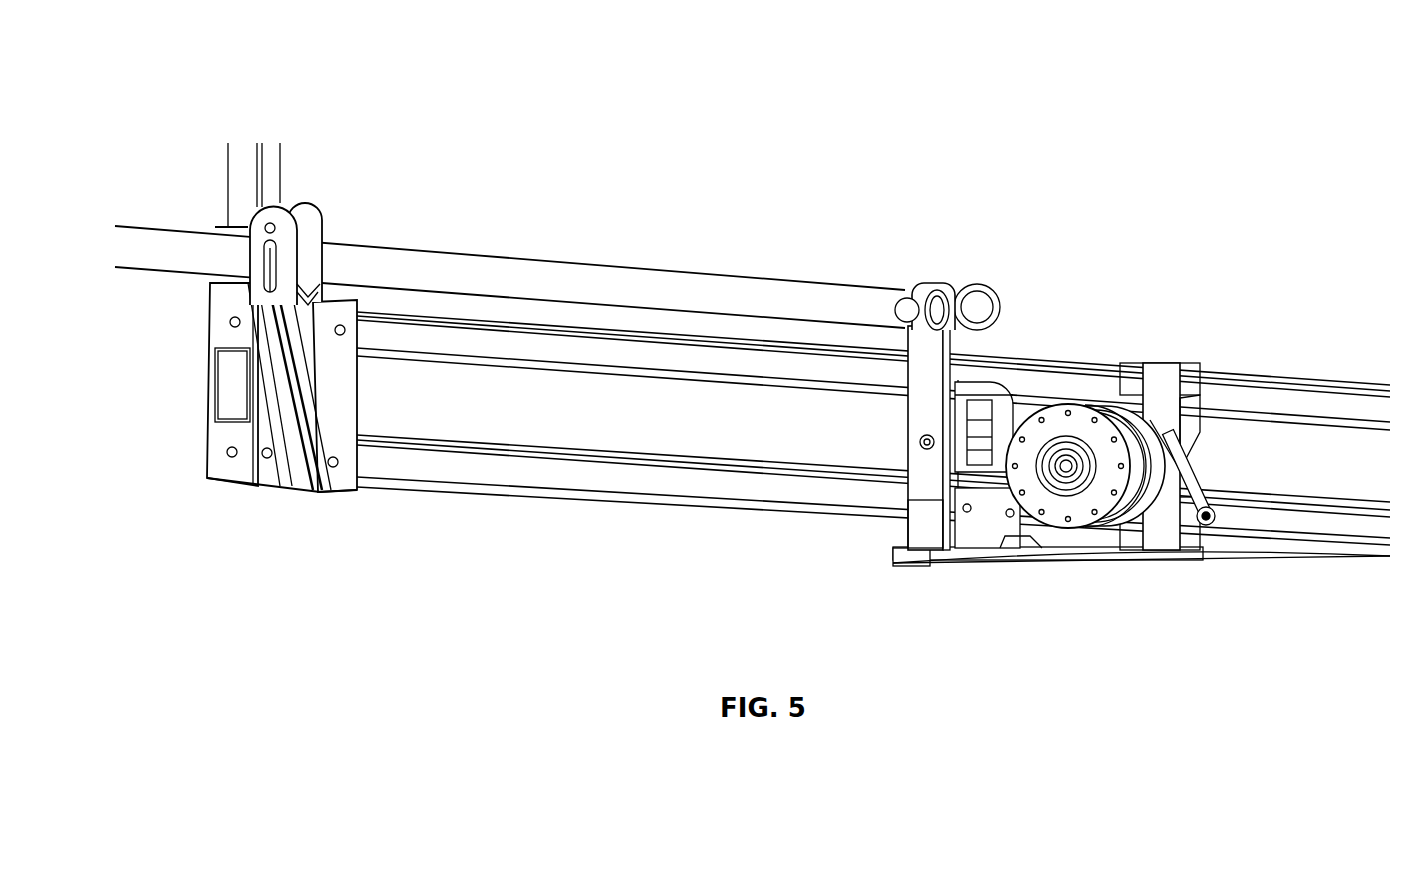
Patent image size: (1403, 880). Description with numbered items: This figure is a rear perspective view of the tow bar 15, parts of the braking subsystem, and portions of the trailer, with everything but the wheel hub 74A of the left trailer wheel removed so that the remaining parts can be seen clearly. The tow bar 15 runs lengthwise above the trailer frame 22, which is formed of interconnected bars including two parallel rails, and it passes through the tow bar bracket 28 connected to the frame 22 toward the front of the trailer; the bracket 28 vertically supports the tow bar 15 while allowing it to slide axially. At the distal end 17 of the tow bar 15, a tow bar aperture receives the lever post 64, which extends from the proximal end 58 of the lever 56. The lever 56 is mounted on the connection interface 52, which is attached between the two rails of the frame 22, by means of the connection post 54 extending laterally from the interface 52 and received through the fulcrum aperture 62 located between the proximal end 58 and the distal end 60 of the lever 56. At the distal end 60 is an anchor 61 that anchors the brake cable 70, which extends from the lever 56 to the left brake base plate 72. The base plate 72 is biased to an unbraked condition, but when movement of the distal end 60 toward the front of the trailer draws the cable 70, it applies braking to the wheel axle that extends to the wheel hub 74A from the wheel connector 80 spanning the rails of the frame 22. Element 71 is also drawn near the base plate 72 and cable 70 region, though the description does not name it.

The tow bar 15 is at (582, 283).
The frame 22 is at (1283, 402).
The tow bar bracket 28 is at (313, 208).
The distal end 17 is at (947, 307).
The proximal end 58 is at (940, 282).
The lever post 64 is at (898, 300).
The lever 56 is at (952, 392).
The connection interface 52 is at (958, 440).
The connection post 54 is at (920, 436).
The fulcrum aperture 62 is at (918, 447).
The distal end 60 is at (913, 523).
The anchor 61 is at (917, 560).
The brake cable 70 is at (1030, 542).
The base tray 71 is at (1140, 560).
The left brake base plate 72 is at (1188, 488).
The wheel hub 74A is at (1053, 418).
The wheel connector 80 is at (1163, 375).